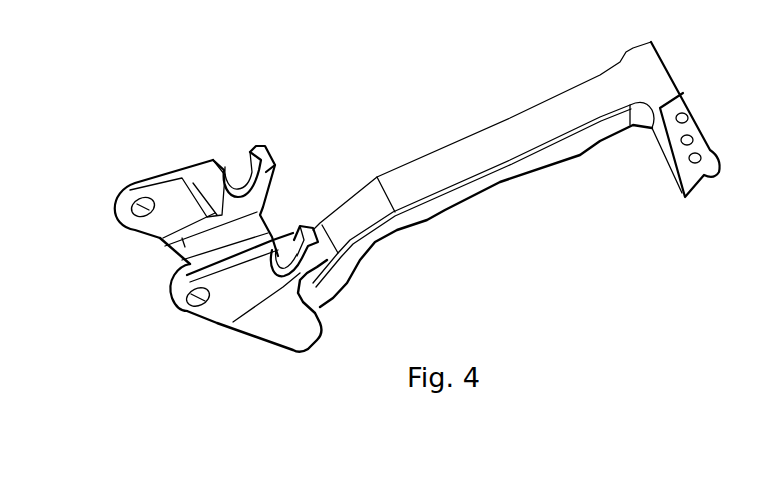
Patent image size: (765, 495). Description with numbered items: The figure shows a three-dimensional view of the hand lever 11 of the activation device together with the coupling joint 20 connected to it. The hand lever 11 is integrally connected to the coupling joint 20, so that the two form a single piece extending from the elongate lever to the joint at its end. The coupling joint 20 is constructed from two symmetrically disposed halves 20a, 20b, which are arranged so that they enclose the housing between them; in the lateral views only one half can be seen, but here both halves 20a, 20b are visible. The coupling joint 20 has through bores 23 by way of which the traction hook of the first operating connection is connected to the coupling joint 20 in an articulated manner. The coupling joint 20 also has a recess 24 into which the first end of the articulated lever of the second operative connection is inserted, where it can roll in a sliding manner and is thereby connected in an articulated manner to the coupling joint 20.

The hand lever 11 is at (410, 185).
The coupling joint 20 is at (211, 98).
The half of the coupling joint 20a is at (167, 193).
The half of the coupling joint 20b is at (230, 315).
The through bore 23 is at (153, 230).
The recess 24 is at (240, 183).